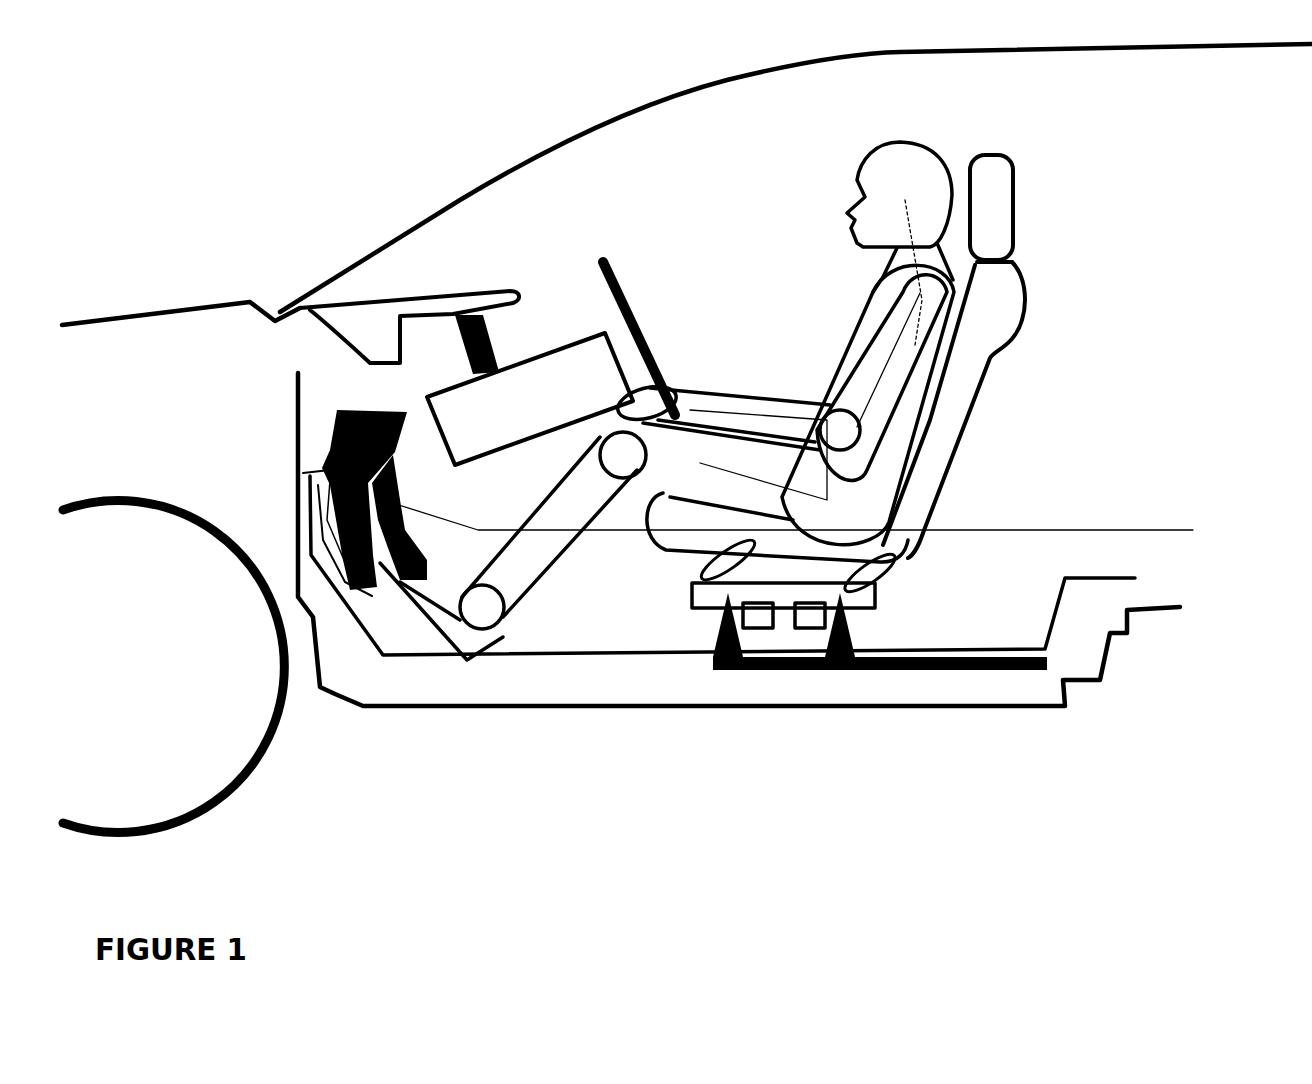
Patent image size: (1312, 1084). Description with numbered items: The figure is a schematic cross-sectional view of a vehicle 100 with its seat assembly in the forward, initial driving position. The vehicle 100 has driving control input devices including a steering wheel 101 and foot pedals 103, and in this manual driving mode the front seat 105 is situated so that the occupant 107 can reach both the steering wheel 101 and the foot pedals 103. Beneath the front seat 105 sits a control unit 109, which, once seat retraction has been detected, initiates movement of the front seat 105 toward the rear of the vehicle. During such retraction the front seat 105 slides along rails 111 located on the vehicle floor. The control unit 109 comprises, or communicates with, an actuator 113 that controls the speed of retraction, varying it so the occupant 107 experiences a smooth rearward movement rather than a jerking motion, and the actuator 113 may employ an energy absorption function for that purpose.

The vehicle 100 is at (245, 214).
The steering wheel 101 is at (620, 270).
The foot pedals 103 is at (415, 560).
The front seat 105 is at (1007, 152).
The occupant 107 is at (901, 138).
The control unit 109 is at (857, 637).
The rails 111 is at (785, 672).
The actuator 113 is at (745, 643).